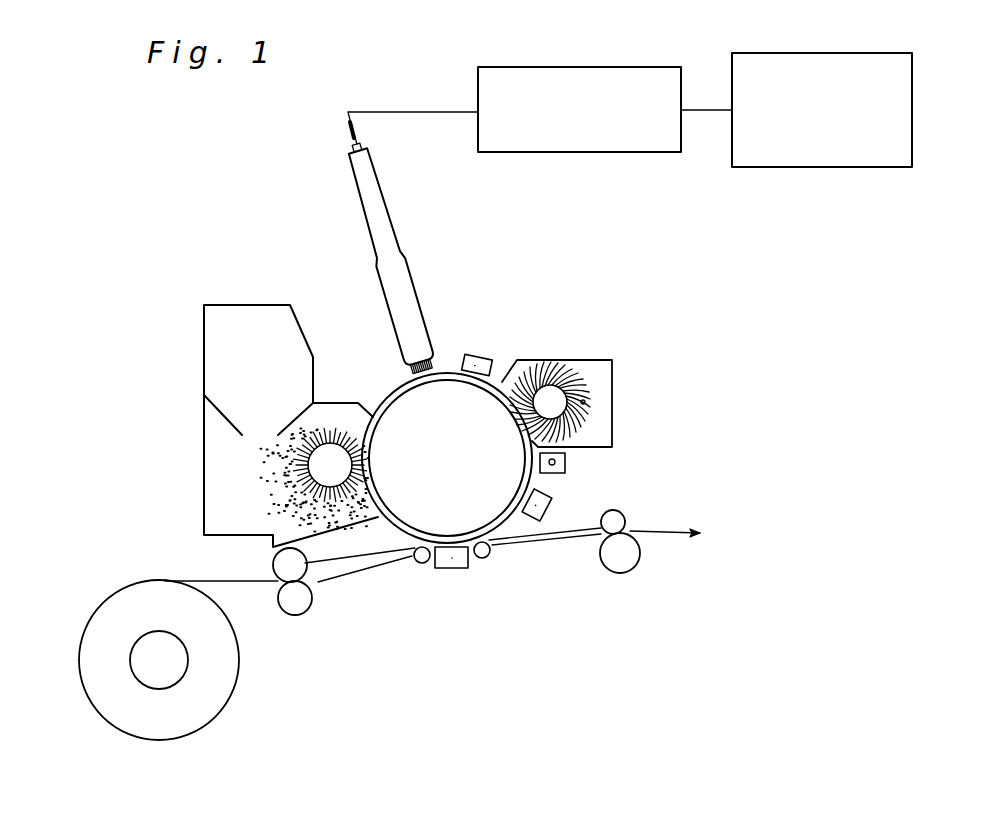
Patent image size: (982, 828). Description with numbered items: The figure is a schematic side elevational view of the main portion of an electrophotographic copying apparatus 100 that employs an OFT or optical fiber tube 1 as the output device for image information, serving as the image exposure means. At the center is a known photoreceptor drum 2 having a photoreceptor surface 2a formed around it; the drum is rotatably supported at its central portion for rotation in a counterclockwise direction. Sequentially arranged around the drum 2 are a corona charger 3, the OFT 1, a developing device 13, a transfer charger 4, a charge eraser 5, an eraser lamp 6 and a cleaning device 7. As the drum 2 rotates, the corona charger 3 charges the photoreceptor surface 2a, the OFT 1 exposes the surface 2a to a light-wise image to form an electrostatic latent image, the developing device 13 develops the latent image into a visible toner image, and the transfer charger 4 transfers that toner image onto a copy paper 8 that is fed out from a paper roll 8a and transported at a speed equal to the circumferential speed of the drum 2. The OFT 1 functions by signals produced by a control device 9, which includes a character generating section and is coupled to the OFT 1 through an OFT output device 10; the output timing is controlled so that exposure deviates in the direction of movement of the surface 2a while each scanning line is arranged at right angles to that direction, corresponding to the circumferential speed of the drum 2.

The optical fiber tube (OFT) 1 is at (425, 307).
The photoreceptor drum 2 is at (401, 423).
The photoreceptor surface 2a is at (410, 388).
The corona charger 3 is at (484, 357).
The transfer charger 4 is at (455, 568).
The charge eraser 5 is at (553, 512).
The eraser lamp 6 is at (566, 460).
The cleaning device 7 is at (613, 393).
The copy paper 8 is at (243, 582).
The paper roll 8a is at (222, 690).
The control device 9 is at (912, 70).
The OFT output device 10 is at (616, 67).
The developing device 13 is at (222, 481).
The electrophotographic copying apparatus 100 is at (583, 311).